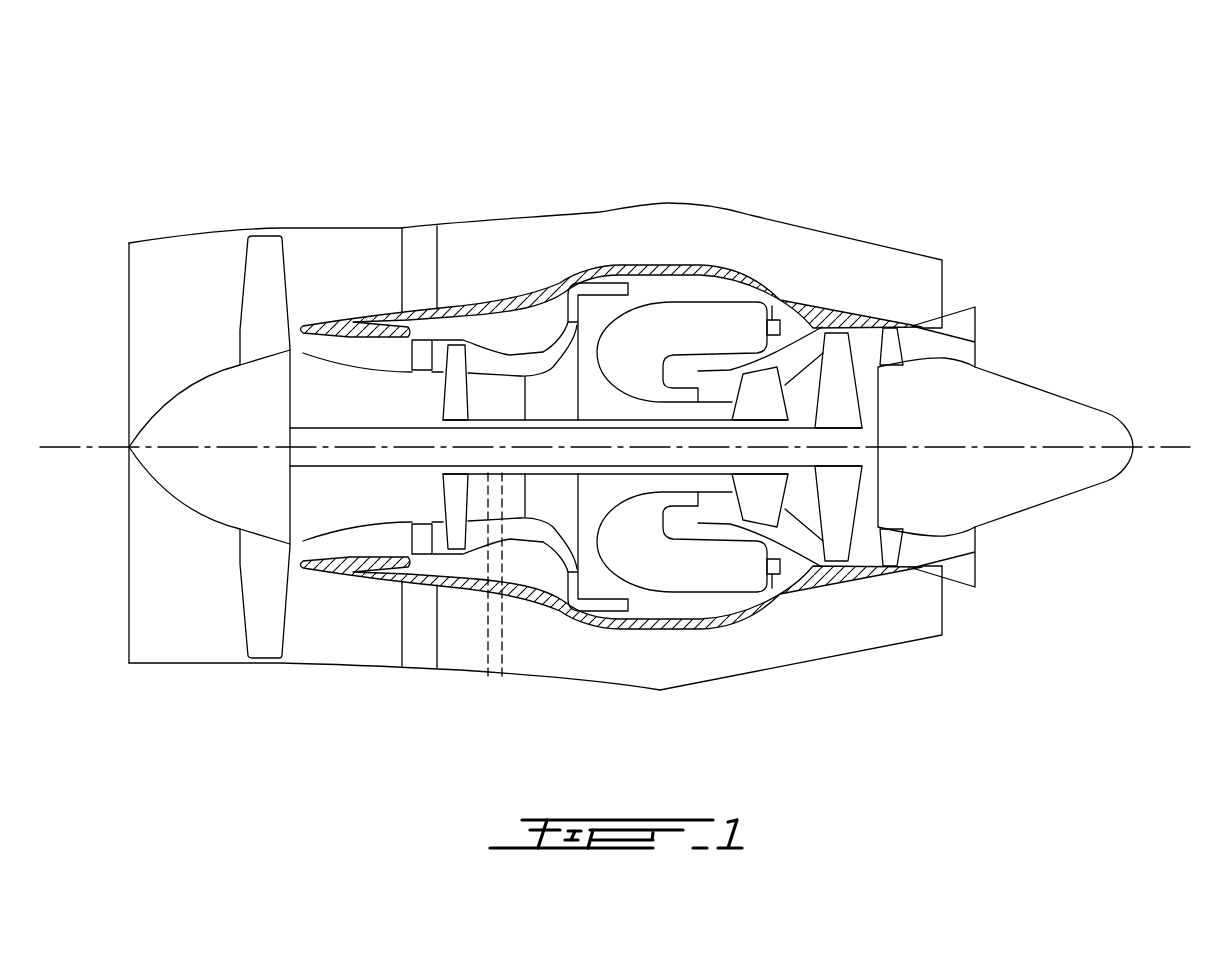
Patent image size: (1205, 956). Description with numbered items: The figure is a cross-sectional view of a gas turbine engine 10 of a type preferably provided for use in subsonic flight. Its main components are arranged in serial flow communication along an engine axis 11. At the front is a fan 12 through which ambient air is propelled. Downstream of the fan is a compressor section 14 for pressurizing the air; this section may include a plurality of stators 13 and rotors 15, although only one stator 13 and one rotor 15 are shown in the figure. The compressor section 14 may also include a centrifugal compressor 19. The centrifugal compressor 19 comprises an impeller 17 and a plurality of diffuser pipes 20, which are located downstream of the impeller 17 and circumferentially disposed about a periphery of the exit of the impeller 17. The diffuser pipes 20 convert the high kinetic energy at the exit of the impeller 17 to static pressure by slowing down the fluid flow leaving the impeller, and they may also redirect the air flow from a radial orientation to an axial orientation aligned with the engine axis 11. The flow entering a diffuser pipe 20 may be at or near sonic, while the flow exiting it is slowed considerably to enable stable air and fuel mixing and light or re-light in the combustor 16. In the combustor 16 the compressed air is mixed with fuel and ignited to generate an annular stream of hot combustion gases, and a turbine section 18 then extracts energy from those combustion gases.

The gas turbine engine 10 is at (840, 139).
The engine axis 11 is at (1168, 445).
The fan 12 is at (262, 583).
The stator 13 is at (422, 352).
The compressor section 14 is at (510, 360).
The rotor 15 is at (455, 360).
The combustor 16 is at (668, 328).
The impeller 17 is at (553, 383).
The turbine section 18 is at (800, 493).
The centrifugal compressor 19 is at (566, 416).
The diffuser pipes 20 is at (607, 290).